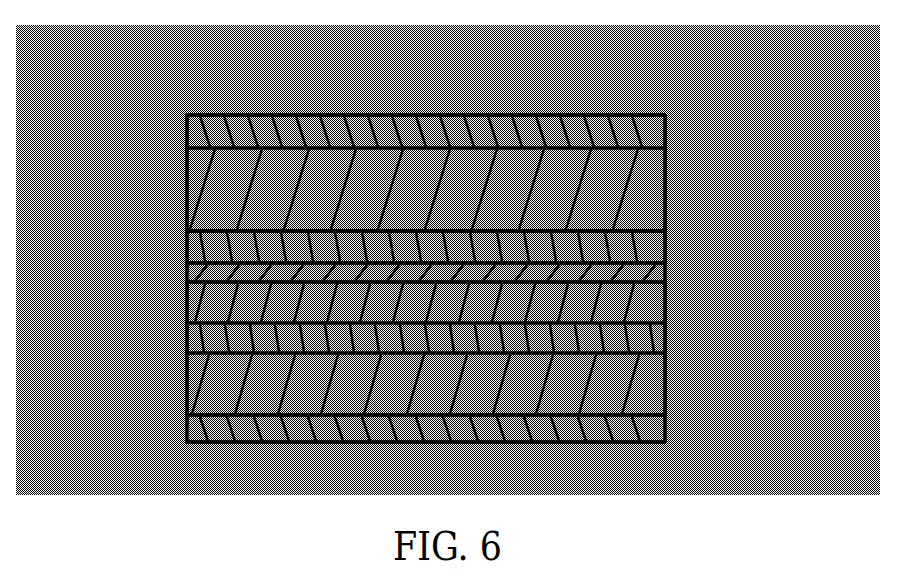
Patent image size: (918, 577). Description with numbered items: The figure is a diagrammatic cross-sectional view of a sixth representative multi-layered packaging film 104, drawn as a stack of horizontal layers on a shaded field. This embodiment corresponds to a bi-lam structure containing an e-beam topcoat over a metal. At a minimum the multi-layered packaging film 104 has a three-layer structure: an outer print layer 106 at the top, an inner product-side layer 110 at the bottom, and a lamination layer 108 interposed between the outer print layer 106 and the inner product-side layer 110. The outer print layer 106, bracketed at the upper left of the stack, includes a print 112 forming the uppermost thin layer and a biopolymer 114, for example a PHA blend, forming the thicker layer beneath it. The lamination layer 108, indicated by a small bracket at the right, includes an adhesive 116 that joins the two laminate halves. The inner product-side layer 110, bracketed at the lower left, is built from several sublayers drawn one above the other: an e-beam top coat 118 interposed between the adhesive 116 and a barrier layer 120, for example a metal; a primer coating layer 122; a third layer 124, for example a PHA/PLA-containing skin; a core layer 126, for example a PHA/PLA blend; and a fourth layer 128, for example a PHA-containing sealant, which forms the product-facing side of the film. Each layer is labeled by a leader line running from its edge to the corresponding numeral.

The multi-layered packaging film 104 is at (130, 83).
The outer print layer 106 is at (150, 113).
The lamination layer 108 is at (690, 232).
The inner product-side layer 110 is at (170, 290).
The print 112 is at (667, 123).
The biopolymer 114 is at (645, 175).
The adhesive 116 is at (187, 243).
The e-beam top coat 118 is at (647, 275).
The barrier layer 120 is at (647, 303).
The primer coating layer 122 is at (643, 327).
The third layer 124 is at (673, 350).
The core layer 126 is at (673, 393).
The fourth layer 128 is at (670, 433).